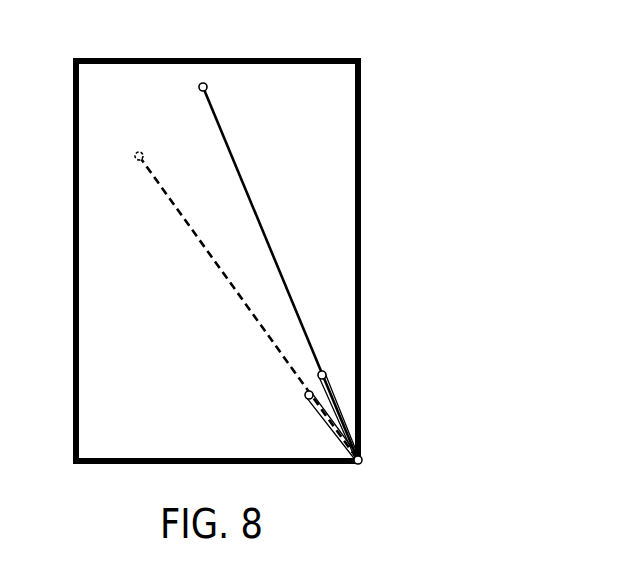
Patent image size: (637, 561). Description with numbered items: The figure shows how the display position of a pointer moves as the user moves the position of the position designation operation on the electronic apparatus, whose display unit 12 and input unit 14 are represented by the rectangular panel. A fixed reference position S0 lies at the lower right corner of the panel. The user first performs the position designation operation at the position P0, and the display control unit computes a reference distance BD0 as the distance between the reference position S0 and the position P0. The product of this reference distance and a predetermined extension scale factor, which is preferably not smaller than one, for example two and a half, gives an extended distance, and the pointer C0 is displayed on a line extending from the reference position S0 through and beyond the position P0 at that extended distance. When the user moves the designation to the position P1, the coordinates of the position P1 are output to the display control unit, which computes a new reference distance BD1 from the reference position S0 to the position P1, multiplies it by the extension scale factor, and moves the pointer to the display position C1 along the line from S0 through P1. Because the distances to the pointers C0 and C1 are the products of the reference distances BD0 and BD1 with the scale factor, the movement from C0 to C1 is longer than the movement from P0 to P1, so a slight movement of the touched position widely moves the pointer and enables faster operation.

The display unit 12 is at (360, 85).
The input unit 14 is at (217, 261).
The pointer C1 is at (208, 89).
The pointer C0 is at (143, 153).
The position P1 is at (324, 371).
The position of the position designation operation P0 is at (305, 393).
The reference position S0 is at (364, 459).
The reference distance BD1 is at (343, 417).
The reference distance BD0 is at (331, 428).